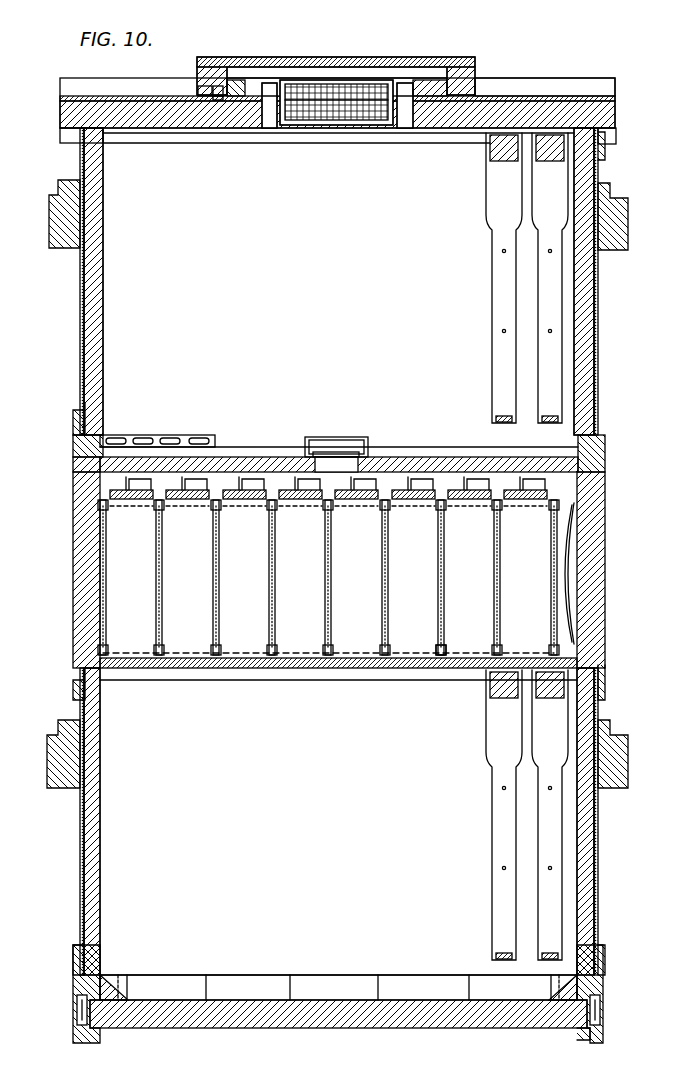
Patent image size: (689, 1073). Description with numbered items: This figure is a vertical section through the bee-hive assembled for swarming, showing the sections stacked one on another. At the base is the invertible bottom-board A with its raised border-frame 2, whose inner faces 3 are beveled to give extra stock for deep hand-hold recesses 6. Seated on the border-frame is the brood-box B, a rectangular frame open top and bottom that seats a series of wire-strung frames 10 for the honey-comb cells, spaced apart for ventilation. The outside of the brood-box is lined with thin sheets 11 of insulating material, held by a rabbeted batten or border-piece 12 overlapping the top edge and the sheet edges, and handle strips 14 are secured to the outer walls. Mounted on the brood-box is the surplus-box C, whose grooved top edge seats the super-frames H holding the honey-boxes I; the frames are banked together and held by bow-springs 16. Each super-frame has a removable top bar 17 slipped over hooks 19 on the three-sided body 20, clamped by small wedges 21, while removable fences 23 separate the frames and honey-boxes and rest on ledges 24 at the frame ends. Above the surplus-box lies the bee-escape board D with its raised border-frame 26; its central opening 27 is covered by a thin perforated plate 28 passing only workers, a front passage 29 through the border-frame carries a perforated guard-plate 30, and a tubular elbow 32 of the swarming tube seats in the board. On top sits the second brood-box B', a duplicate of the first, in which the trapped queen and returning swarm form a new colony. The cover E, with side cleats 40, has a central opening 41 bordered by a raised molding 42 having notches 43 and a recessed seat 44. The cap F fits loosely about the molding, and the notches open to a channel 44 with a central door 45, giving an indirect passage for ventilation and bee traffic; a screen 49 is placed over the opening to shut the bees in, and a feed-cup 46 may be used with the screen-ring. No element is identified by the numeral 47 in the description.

The side cleats 40 is at (616, 96).
The raised molding 42 is at (476, 76).
The notches 43 is at (238, 80).
The recessed seat 44 is at (420, 80).
The central door 45 is at (200, 88).
The feed-cup 46 is at (285, 144).
The post 47 is at (268, 83).
The central opening 41 is at (410, 129).
The screen 49 is at (338, 80).
The cap F is at (455, 57).
The cover E is at (62, 120).
The upper brood-box B' is at (312, 281).
The brood-box B is at (316, 821).
The super or surplus-box C is at (73, 604).
The bee-escape board D is at (75, 466).
The sheets of insulating material 11 is at (600, 332).
The batten or border-piece 12 is at (606, 150).
The handle strips 14 is at (628, 245).
The wire-strung frame 10 is at (527, 546).
The raised border-frame 26 is at (602, 452).
The opening 27 is at (370, 448).
The perforated metal plate 28 is at (350, 462).
The passage 29 is at (212, 437).
The perforated guard-plate 30 is at (168, 438).
The tubular elbow 32 is at (322, 437).
The bow-springs 16 is at (568, 548).
The removable top bar 17 is at (520, 500).
The hooks 19 is at (415, 500).
The wedges 21 is at (482, 492).
The removable fences 23 is at (440, 598).
The super-frames H is at (546, 496).
The honey-boxes I is at (465, 587).
The three-sided body 20 is at (408, 668).
The ledges 24 is at (445, 665).
The border-frame 2 is at (74, 992).
The beveled inner faces 3 is at (104, 992).
The hand-hold recesses 6 is at (80, 1012).
The bottom-board A is at (350, 1029).